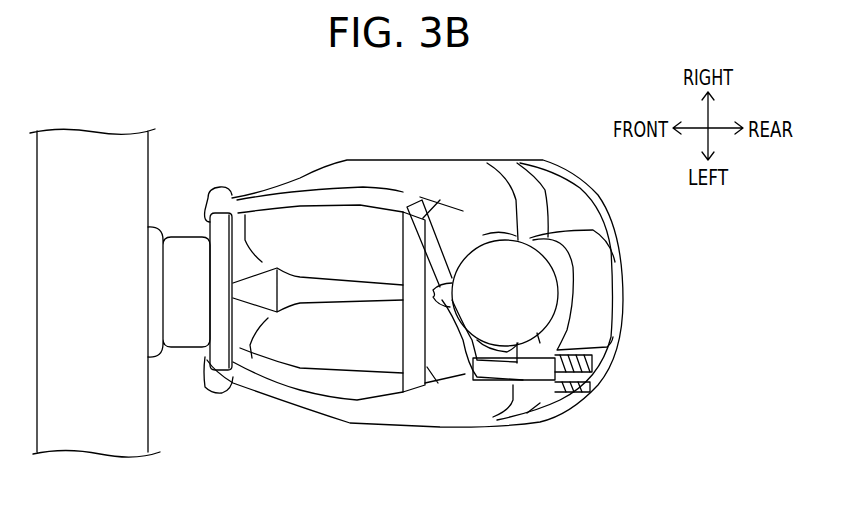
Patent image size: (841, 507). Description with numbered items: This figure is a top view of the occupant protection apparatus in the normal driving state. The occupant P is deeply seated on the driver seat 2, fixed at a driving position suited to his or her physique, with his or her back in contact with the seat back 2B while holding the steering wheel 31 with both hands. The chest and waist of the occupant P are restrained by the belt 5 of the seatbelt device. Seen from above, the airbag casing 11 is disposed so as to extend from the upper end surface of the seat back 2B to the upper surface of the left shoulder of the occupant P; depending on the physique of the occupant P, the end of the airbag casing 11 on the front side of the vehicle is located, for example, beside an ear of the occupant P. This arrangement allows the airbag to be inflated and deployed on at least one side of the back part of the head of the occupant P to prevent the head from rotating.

The driver seat 2 is at (576, 137).
The seat back 2B is at (600, 198).
The belt 5 is at (417, 210).
The airbag casing 11 is at (525, 380).
The steering wheel 31 is at (220, 195).
The occupant P is at (487, 183).